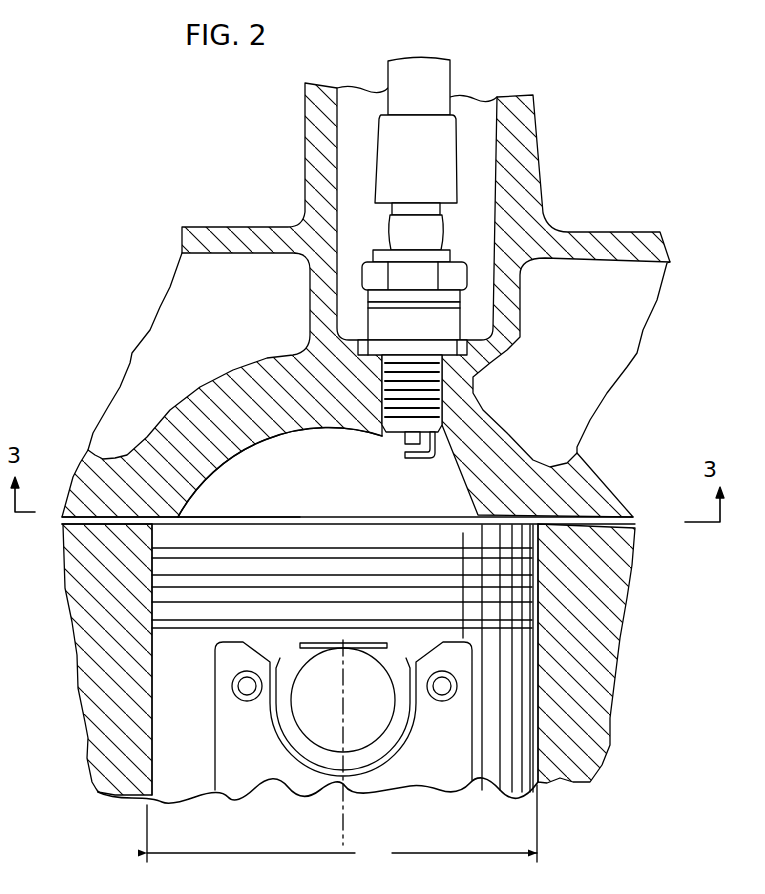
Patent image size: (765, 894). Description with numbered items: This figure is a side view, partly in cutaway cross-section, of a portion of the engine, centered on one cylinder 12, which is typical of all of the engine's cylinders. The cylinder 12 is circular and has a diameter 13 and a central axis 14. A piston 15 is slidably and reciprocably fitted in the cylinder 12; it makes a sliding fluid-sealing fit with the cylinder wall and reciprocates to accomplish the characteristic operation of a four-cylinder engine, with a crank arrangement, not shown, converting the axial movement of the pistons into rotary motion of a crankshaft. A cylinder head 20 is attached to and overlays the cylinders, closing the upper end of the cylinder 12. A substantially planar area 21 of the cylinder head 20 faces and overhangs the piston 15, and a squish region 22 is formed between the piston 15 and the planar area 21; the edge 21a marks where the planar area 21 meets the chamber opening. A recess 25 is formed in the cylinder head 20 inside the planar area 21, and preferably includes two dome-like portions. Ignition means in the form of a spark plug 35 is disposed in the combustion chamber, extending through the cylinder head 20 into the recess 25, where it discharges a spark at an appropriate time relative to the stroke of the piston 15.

The cylinder head 20 is at (528, 318).
The squish region 22 is at (543, 517).
The recess 25 is at (314, 503).
The combustion chamber peripheral edge 21a is at (263, 516).
The spark plug 35 is at (405, 449).
The planar area 21 is at (526, 523).
The piston 15 is at (542, 612).
The cylinder 12 is at (528, 725).
The central axis 14 is at (341, 806).
The diameter 13 is at (342, 827).